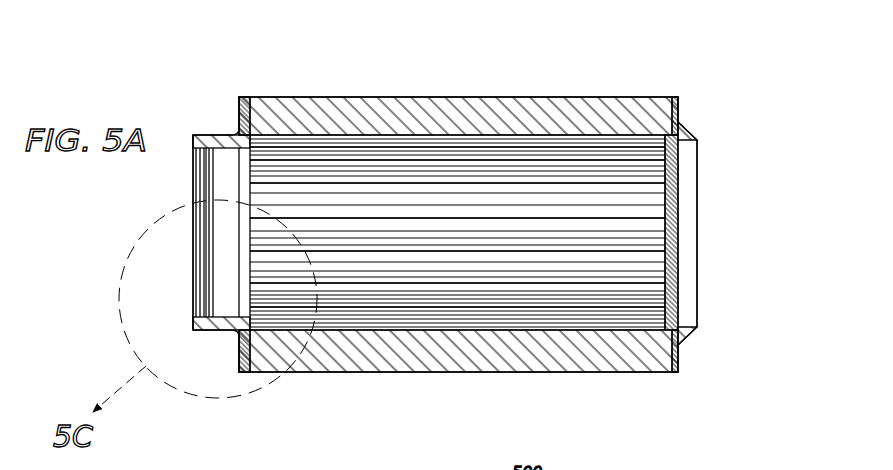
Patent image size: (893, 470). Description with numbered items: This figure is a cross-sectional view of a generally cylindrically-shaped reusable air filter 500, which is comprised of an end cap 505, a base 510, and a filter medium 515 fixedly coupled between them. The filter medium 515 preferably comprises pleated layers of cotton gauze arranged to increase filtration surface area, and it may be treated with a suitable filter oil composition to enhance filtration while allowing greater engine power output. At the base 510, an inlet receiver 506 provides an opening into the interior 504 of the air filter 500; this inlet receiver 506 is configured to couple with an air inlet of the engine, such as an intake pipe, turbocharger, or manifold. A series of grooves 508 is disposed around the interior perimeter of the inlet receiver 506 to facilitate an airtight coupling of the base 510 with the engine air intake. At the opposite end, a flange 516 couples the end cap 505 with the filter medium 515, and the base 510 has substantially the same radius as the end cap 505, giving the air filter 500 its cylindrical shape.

The reusable air filter 500 is at (257, 78).
The interior 504 is at (390, 278).
The end cap 505 is at (678, 227).
The inlet receiver 506 is at (226, 277).
The grooves 508 is at (193, 232).
The base 510 is at (213, 137).
The filter medium 515 is at (583, 97).
The flange 516 is at (678, 108).